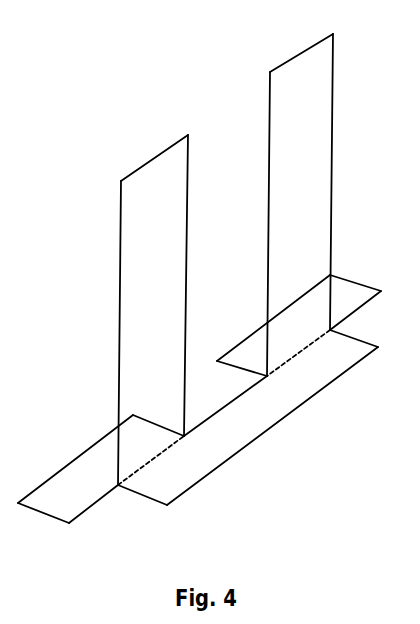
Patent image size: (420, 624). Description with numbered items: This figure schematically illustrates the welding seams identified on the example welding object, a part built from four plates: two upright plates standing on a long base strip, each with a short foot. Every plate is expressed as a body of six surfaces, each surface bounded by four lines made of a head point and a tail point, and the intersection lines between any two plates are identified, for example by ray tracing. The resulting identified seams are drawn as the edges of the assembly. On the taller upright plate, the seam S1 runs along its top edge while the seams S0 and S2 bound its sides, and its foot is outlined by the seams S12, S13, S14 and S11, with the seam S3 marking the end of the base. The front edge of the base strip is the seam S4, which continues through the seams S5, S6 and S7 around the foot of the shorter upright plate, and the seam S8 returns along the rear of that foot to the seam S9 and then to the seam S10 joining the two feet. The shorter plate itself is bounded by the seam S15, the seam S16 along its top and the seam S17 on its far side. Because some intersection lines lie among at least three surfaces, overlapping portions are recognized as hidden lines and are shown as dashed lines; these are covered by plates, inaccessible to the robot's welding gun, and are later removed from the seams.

The left edge of second upright plate S0 is at (255, 224).
The identified welding seam S1 is at (301, 51).
The identified welding seam S2 is at (316, 182).
The identified welding seam S3 is at (354, 345).
The identified welding seam S4 is at (272, 426).
The identified welding seam S5 is at (142, 499).
The identified welding seam S6 is at (93, 504).
The identified welding seam S7 is at (43, 518).
The identified welding seam S8 is at (75, 459).
The identified welding seam S9 is at (158, 421).
The identified welding seam S10 is at (225, 406).
The identified welding seam S11 is at (238, 373).
The identified welding seam S12 is at (273, 318).
The identified welding seam S13 is at (355, 277).
The identified welding seam S14 is at (357, 310).
The identified welding seam S15 is at (102, 333).
The identified welding seam S16 is at (154, 156).
The right edge of first upright plate S17 is at (169, 285).